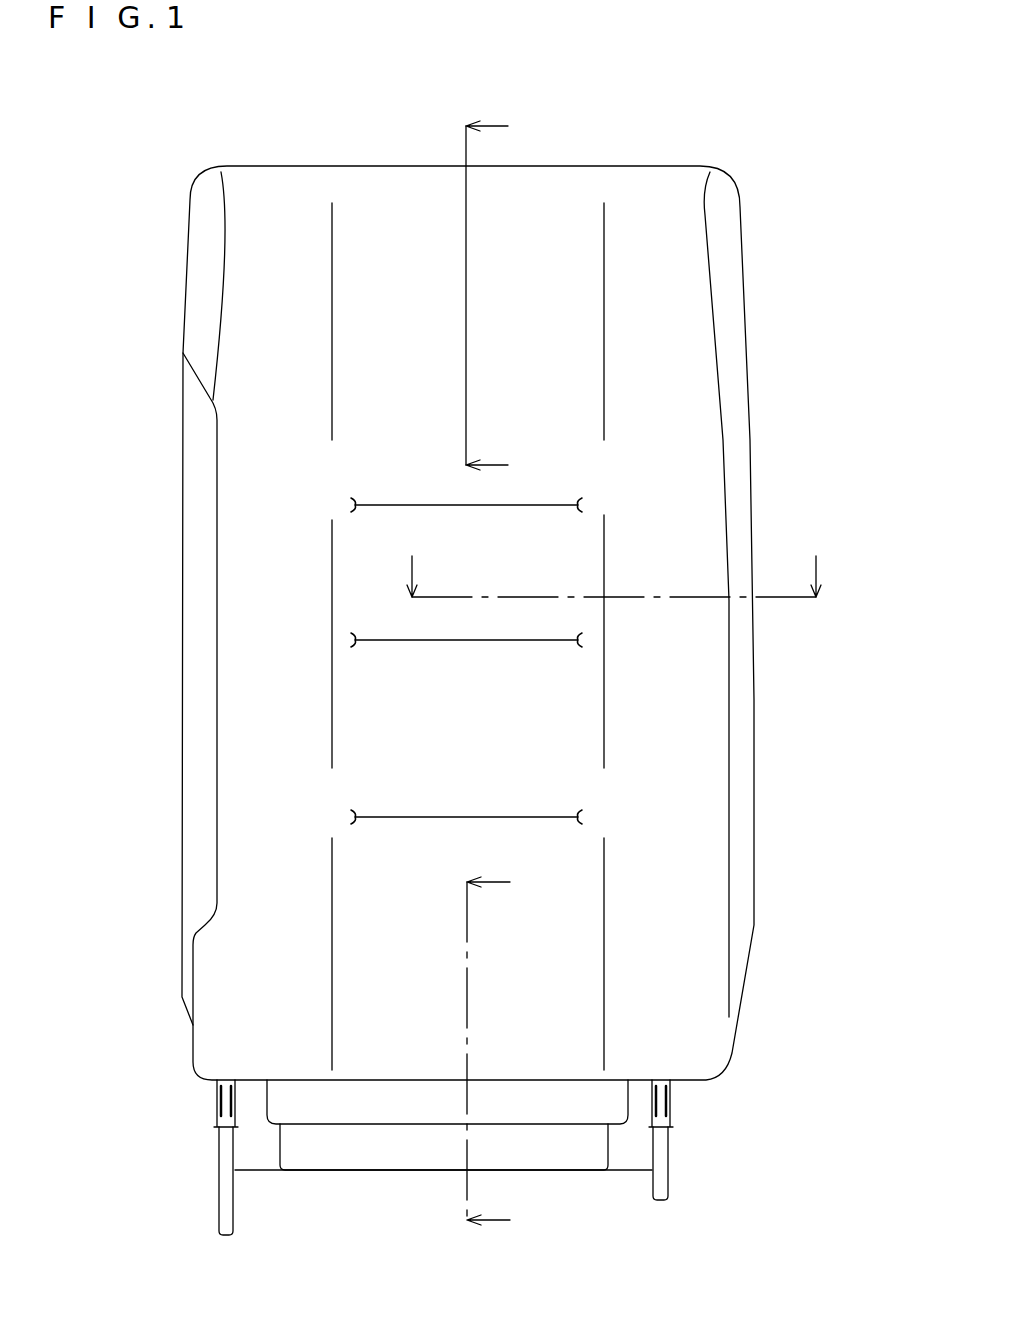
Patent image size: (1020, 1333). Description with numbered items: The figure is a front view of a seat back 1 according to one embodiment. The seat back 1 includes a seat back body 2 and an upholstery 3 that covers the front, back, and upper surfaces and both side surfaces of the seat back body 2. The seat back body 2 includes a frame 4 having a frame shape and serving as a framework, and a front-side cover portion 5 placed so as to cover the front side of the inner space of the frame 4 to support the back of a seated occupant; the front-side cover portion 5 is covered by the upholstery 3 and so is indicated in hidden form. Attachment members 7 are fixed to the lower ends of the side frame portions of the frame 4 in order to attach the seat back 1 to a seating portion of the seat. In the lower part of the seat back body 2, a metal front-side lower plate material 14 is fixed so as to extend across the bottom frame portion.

The seat back 1 is at (603, 108).
The seat back body 2 is at (200, 1113).
The upholstery 3 is at (243, 500).
The frame 4 is at (684, 1108).
The front-side cover portion 5 is at (272, 592).
The attachment member 7 is at (218, 1185).
The front-side lower plate material 14 is at (398, 1152).